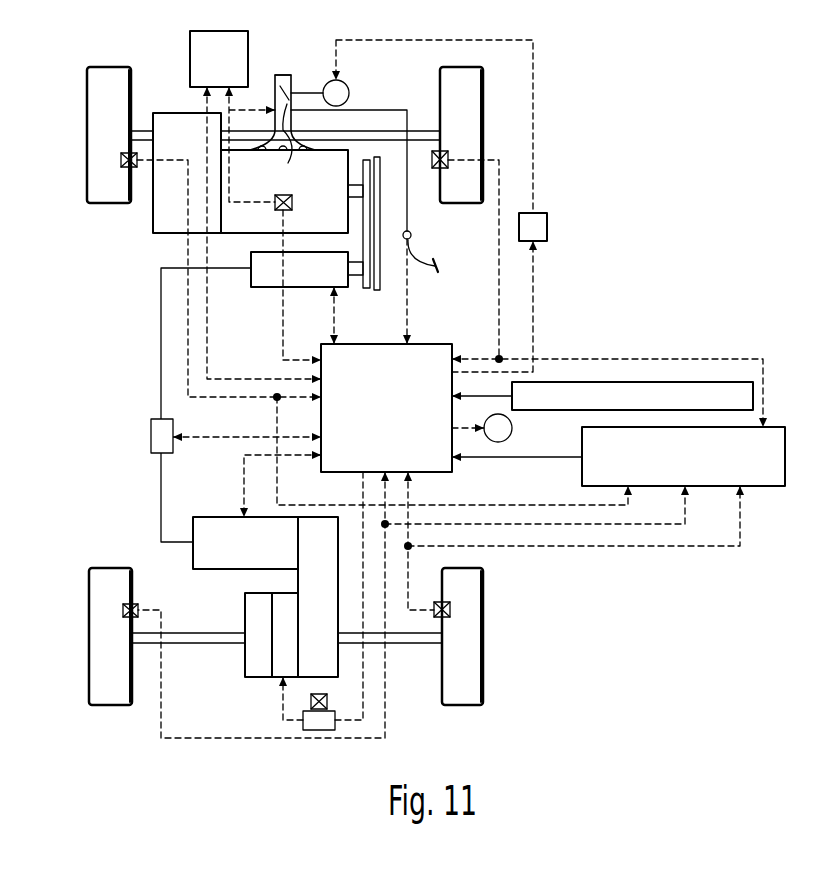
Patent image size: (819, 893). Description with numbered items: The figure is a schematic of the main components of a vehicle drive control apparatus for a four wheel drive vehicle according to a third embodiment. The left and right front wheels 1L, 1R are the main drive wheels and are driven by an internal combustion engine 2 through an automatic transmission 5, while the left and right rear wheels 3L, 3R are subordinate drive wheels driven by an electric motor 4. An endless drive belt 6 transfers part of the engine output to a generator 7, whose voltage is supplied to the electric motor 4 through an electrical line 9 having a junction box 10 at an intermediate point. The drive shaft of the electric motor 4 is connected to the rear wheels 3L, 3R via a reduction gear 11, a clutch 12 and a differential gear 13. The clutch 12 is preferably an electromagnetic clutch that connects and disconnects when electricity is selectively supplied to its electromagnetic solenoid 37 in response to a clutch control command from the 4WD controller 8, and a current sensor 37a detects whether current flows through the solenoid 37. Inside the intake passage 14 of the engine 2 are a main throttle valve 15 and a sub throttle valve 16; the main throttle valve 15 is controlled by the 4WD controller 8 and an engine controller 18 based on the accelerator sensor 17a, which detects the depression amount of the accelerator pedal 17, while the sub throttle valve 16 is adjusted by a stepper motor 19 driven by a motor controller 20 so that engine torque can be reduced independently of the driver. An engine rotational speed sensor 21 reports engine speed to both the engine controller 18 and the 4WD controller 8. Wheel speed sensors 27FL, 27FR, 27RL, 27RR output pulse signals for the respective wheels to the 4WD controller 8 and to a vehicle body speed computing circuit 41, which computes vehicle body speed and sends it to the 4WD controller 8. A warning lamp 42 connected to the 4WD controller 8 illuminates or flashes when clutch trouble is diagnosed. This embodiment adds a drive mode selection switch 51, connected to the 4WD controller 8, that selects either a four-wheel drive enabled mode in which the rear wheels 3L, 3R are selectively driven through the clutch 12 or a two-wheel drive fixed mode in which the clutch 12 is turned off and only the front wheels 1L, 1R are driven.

The left front wheel 1L is at (87, 121).
The right front wheel 1R is at (483, 92).
The internal combustion engine 2 is at (245, 233).
The left rear wheel 3L is at (89, 582).
The right rear wheel 3R is at (483, 605).
The electric motor 4 is at (200, 569).
The automatic transmission 5 is at (153, 190).
The endless drive belt 6 is at (373, 243).
The generator 7 is at (257, 287).
The 4WD controller 8 is at (360, 452).
The electrical line 9 is at (161, 320).
The junction box 10 is at (153, 420).
The reduction gear 11 is at (330, 660).
The clutch 12 is at (275, 677).
The differential gear 13 is at (245, 660).
The intake passage 14 is at (270, 77).
The main throttle valve 15 is at (292, 142).
The sub throttle valve 16 is at (285, 75).
The accelerator pedal 17 is at (445, 258).
The accelerator sensor 17a is at (411, 235).
The engine controller 18 is at (190, 45).
The stepper motor 19 is at (348, 86).
The motor controller 20 is at (533, 213).
The engine rotational speed sensor 21 is at (292, 200).
The wheel speed sensor 27FL is at (121, 160).
The wheel speed sensor 27FR is at (445, 152).
The wheel speed sensor 27RL is at (123, 610).
The wheel speed sensor 27RR is at (450, 611).
The electromagnetic solenoid 37 is at (330, 726).
The current sensor 37a is at (311, 702).
The vehicle body speed computing circuit 41 is at (762, 487).
The warning lamp 42 is at (513, 428).
The drive mode selection switch 51 is at (712, 382).